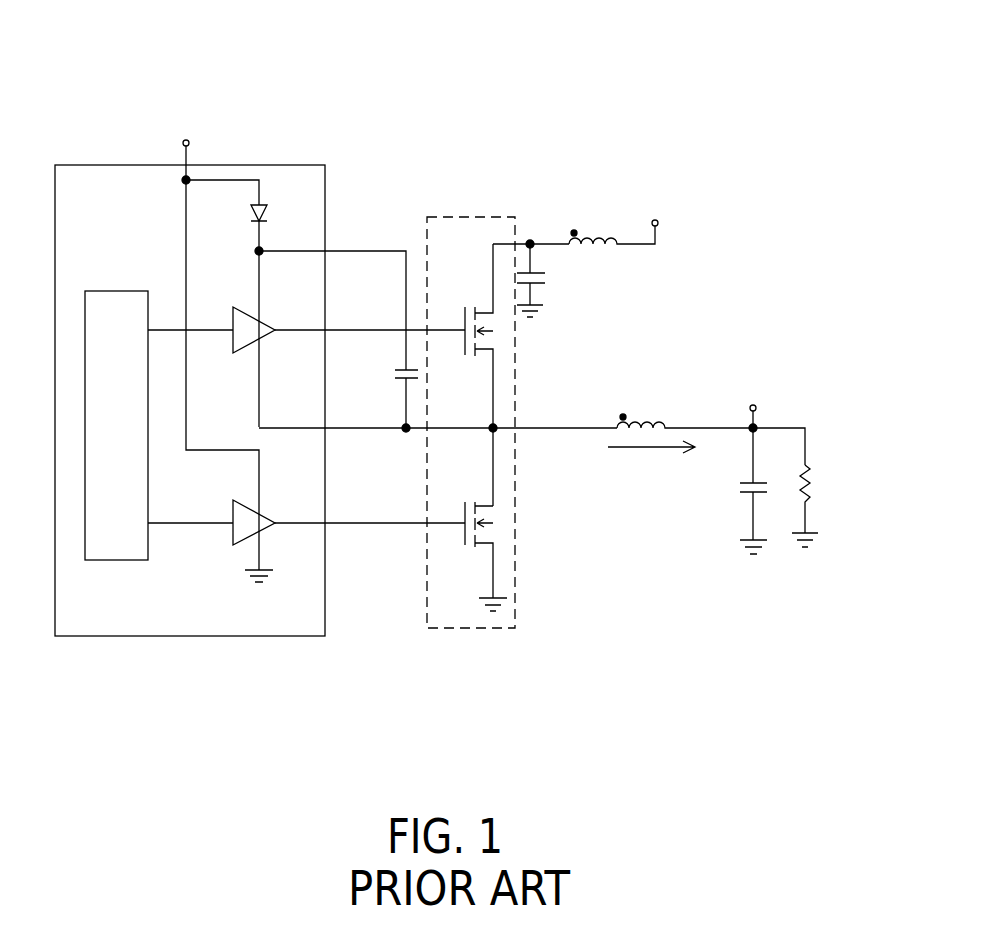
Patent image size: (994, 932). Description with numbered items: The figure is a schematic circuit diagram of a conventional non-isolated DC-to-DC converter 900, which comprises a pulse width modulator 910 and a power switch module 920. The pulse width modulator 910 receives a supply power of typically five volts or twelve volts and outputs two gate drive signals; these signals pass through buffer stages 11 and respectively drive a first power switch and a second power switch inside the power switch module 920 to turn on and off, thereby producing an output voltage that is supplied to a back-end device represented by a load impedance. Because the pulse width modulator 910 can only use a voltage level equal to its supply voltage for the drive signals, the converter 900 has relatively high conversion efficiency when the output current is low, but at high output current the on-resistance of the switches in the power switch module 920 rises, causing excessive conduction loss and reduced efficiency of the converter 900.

The non-isolated DC-to-DC converter 900 is at (698, 107).
The pulse width modulator 910 is at (267, 165).
The power switch module 920 is at (472, 215).
The buffer 11 is at (244, 308).